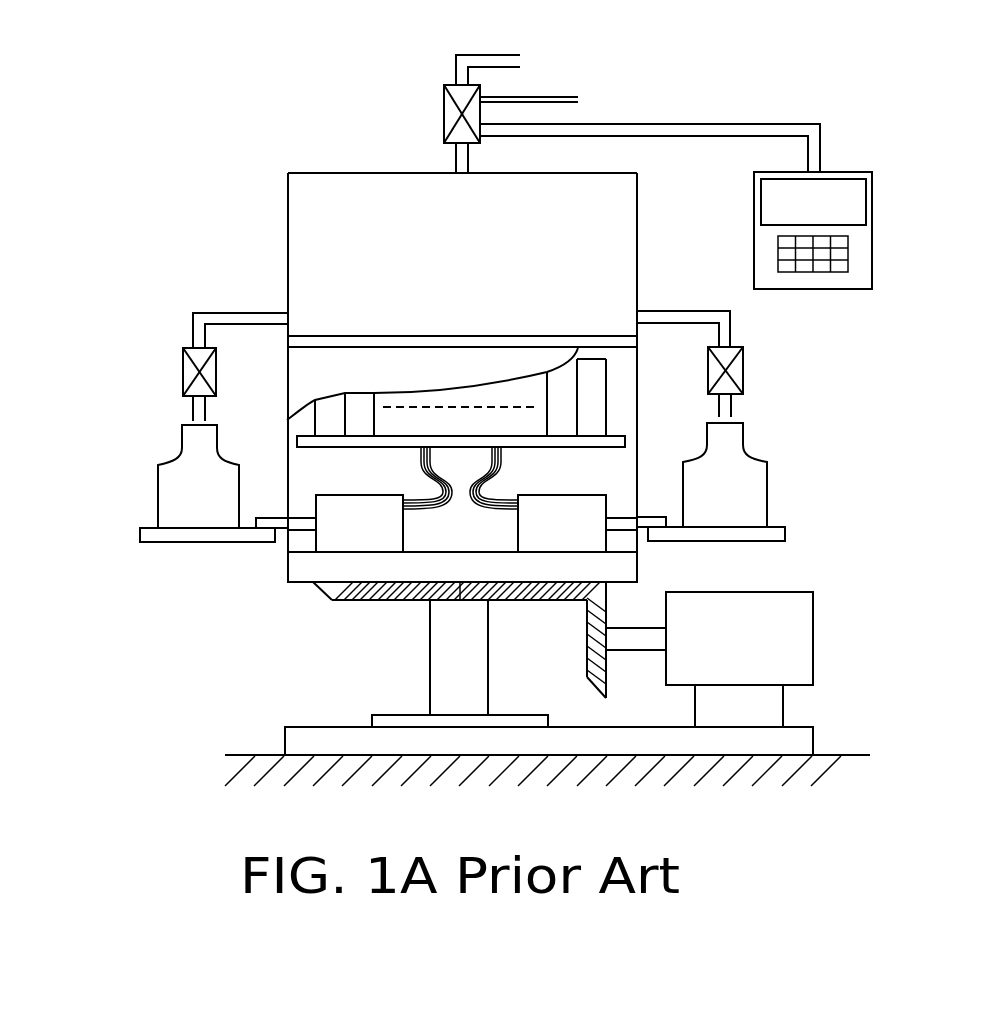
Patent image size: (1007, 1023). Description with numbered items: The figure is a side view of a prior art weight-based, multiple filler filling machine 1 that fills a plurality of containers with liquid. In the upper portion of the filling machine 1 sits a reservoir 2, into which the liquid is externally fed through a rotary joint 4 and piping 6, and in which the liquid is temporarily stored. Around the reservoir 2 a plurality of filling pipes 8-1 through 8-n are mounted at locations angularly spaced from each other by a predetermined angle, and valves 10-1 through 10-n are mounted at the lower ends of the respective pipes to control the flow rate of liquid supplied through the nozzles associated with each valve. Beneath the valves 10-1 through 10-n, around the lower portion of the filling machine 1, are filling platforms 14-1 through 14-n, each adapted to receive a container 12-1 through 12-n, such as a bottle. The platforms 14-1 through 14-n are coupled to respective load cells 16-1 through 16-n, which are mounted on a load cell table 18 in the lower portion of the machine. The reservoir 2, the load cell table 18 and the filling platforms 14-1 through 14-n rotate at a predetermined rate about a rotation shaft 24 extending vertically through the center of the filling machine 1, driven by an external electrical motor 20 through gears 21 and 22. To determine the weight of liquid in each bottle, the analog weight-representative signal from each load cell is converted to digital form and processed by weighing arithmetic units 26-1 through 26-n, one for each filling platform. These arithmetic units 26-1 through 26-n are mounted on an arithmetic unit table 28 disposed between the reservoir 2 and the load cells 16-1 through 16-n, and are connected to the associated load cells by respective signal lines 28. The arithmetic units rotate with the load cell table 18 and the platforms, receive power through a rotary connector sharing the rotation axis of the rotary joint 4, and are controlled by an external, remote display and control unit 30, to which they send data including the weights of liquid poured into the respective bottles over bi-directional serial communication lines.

The filling machine 1 is at (386, 163).
The reservoir 2 is at (623, 267).
The rotary joint 4 is at (448, 115).
The piping 6 is at (498, 57).
The filling pipe 8-1 is at (245, 320).
The filling pipe 8-n is at (724, 330).
The valve 10-1 is at (187, 372).
The valve 10-n is at (735, 373).
The container 12-1 is at (180, 500).
The container 12-n is at (755, 485).
The filling platform 14-1 is at (212, 535).
The filling platform 14-n is at (773, 532).
The load cell 16-1 is at (370, 507).
The load cell 16-n is at (543, 503).
The load cell table 18 is at (303, 568).
The electrical motor 20 is at (800, 647).
The gear 21 is at (600, 683).
The gear 22 is at (392, 593).
The rotation shaft 24 is at (475, 688).
The arithmetic unit 26-1 is at (333, 412).
The arithmetic unit 26-n is at (595, 395).
The arithmetic unit table 28 is at (312, 443).
The display and control unit 30 is at (838, 279).